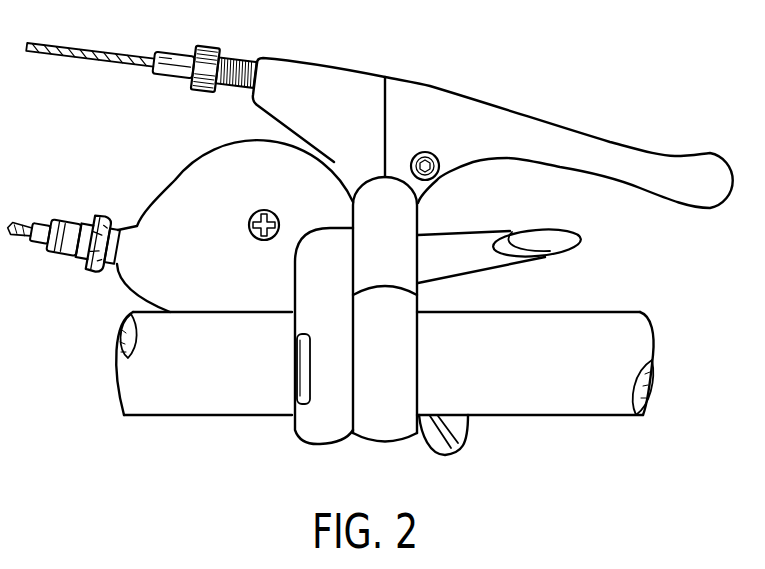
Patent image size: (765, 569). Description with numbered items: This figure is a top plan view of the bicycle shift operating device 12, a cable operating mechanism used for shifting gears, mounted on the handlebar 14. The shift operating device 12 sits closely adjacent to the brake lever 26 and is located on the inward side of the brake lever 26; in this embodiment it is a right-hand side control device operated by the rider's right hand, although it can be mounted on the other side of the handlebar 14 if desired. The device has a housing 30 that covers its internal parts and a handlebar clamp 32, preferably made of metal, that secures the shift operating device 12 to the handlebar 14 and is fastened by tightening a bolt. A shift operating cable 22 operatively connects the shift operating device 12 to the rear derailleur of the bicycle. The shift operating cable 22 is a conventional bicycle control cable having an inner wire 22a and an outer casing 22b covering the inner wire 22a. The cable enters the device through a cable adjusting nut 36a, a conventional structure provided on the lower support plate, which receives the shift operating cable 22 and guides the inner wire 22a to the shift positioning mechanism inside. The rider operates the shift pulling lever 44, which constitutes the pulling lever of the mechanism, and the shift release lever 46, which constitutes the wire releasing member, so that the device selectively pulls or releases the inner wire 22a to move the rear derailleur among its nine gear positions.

The bicycle shift operating device 12 is at (378, 272).
The handlebar 14 is at (532, 415).
The shift operating cable 22 is at (72, 257).
The inner wire 22a is at (15, 236).
The outer casing 22b is at (38, 243).
The brake lever 26 is at (447, 88).
The housing 30 is at (198, 152).
The handlebar clamp 32 is at (295, 375).
The cable adjusting nut 36a is at (85, 282).
The shift pulling lever 44 is at (467, 452).
The shift release lever 46 is at (560, 258).